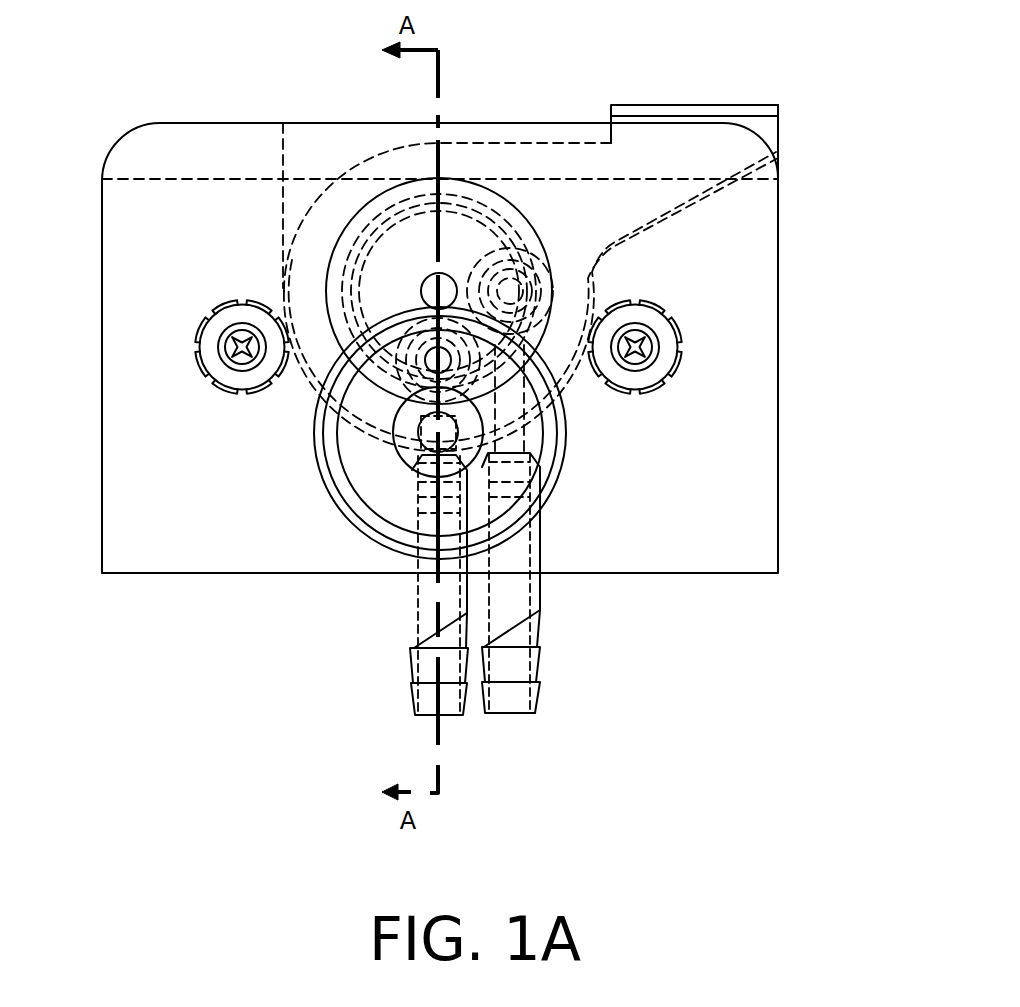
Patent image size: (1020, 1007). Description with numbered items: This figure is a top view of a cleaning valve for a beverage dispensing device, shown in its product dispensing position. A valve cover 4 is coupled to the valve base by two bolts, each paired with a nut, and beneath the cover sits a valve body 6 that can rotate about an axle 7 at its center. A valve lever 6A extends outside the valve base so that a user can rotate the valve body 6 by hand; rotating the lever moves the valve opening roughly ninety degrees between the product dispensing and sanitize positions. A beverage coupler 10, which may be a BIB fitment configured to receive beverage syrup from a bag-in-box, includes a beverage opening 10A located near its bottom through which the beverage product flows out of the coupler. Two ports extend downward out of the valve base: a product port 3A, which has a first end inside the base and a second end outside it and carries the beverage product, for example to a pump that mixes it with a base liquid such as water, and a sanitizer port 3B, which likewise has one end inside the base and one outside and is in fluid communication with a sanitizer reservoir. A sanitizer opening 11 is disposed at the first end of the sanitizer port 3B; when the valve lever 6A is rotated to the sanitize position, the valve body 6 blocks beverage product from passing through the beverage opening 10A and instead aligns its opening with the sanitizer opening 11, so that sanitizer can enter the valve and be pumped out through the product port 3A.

The product port 3A is at (415, 715).
The sanitizer port 3B is at (535, 715).
The valve cover 4 is at (660, 573).
The valve body 6 is at (650, 197).
The valve lever 6A is at (779, 105).
The axle 7 is at (426, 279).
The beverage coupler 10 is at (352, 527).
The beverage opening 10A is at (403, 350).
The sanitizer opening 11 is at (492, 254).